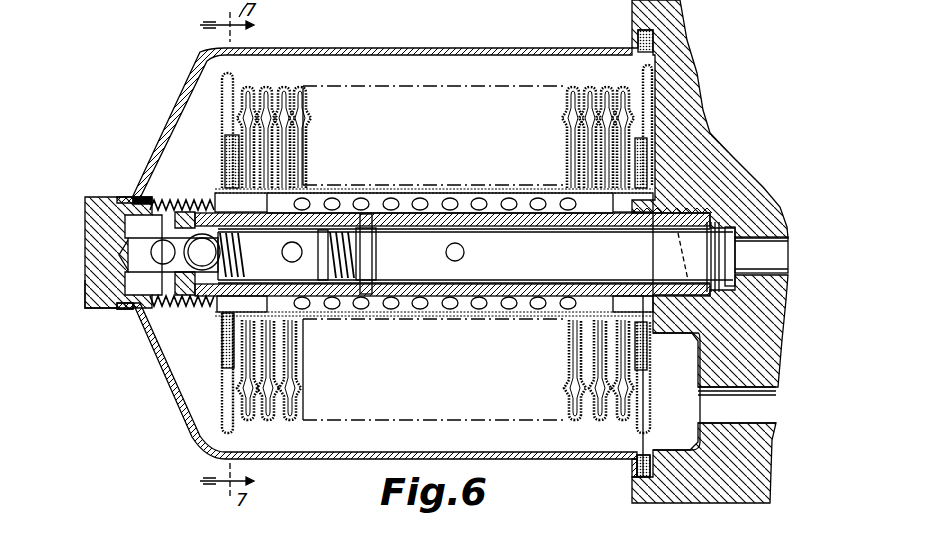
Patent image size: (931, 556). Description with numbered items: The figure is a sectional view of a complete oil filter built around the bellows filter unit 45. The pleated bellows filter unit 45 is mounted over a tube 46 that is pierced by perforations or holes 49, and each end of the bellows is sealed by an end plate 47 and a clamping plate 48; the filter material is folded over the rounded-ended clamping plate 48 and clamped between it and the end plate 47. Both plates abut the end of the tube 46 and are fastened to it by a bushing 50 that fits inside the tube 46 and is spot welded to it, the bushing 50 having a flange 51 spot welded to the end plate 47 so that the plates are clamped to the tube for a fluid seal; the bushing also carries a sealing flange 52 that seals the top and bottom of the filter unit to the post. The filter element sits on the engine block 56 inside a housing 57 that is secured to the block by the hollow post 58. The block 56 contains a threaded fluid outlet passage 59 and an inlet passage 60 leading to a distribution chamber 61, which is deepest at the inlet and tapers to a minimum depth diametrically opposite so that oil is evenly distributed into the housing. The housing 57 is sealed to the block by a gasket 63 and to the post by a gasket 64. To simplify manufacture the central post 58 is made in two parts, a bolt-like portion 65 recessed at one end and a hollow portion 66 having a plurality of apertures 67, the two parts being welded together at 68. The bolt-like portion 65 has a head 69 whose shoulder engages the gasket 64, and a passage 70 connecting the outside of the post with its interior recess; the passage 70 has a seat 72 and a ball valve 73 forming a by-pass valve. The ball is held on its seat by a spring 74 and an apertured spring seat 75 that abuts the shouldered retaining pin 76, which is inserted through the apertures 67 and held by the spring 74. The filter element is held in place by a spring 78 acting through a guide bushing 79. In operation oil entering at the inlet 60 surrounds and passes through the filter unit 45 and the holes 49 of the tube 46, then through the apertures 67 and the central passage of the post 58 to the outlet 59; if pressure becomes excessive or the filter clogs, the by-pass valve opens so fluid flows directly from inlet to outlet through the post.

The bellows filter unit 45 is at (297, 88).
The tube 46 is at (415, 190).
The end plate 47 is at (647, 75).
The clamping plate 48 is at (226, 150).
The holes 49 is at (478, 198).
The bushing 50 is at (215, 312).
The flange 51 is at (225, 335).
The sealing flange 52 is at (328, 315).
The engine block 56 is at (762, 347).
The housing 57 is at (430, 48).
The hollow post 58 is at (494, 296).
The fluid outlet passage 59 is at (770, 265).
The inlet passage 60 is at (755, 411).
The distribution chamber 61 is at (660, 440).
The gasket 63 is at (640, 468).
The gasket 64 is at (118, 310).
The bolt-like portion 65 is at (105, 212).
The hollow portion 66 is at (435, 296).
The apertures 67 is at (547, 215).
The weld 68 is at (290, 262).
The head 69 is at (83, 282).
The passage 70 is at (125, 250).
The seat 72 is at (172, 200).
The ball valve 73 is at (205, 205).
The spring 74 is at (335, 230).
The apertured spring seat 75 is at (350, 228).
The shouldered retaining pin 76 is at (376, 275).
The spring 78 is at (148, 196).
The guide bushing 79 is at (202, 305).